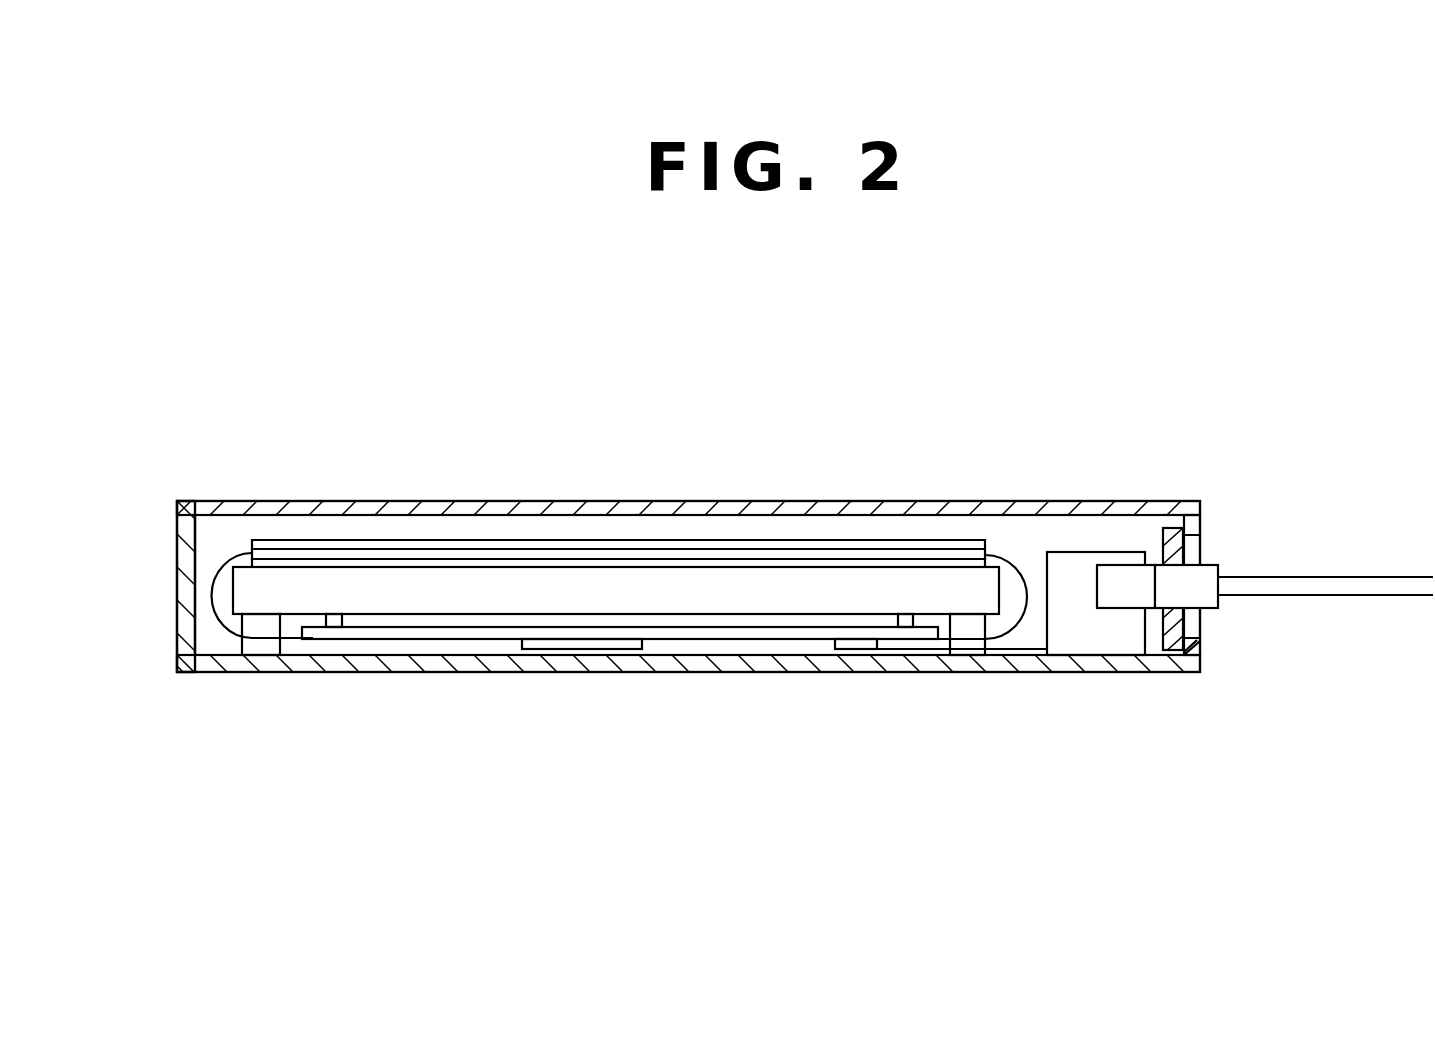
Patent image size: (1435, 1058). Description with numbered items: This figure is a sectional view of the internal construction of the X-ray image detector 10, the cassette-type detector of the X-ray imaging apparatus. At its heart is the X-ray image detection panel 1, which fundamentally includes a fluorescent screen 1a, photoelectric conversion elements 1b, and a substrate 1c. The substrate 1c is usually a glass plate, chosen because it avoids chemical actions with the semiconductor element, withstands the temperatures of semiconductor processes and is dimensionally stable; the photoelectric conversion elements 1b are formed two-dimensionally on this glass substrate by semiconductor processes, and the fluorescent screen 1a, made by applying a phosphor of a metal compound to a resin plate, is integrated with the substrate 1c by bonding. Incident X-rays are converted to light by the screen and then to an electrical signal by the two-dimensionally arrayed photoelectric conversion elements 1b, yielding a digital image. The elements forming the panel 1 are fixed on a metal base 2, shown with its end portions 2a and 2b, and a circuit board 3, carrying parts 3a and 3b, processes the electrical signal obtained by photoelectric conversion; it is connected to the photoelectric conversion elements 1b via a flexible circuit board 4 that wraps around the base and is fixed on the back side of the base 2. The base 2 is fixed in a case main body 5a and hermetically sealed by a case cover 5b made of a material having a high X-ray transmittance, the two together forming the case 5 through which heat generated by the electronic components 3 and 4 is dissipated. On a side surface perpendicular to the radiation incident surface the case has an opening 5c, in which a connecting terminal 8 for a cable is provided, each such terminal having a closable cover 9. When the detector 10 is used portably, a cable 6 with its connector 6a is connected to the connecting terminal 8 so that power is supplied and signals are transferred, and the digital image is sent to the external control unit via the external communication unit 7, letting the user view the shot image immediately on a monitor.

The X-ray image detector 10 is at (920, 404).
The X-ray image detection panel 1 is at (733, 393).
The fluorescent screen 1a is at (530, 540).
The photoelectric conversion elements 1b is at (598, 550).
The substrate 1c is at (697, 565).
The metal base 2 is at (736, 600).
The cell protrusion 2a is at (332, 622).
The cell support 2b is at (266, 647).
The circuit board 3 is at (446, 634).
The adhesive layer 3a is at (590, 648).
The adhesive layer 3b is at (862, 645).
The flexible circuit board 4 is at (213, 593).
The case 5 is at (102, 393).
The case main body 5a is at (185, 573).
The case cover 5b is at (235, 508).
The opening 5c is at (1200, 527).
The cable 6 is at (1272, 598).
The cable connector 6a is at (1210, 573).
The external communication unit 7 is at (1108, 643).
The connecting terminal 8 is at (1120, 581).
The closable cover 9 is at (1168, 530).